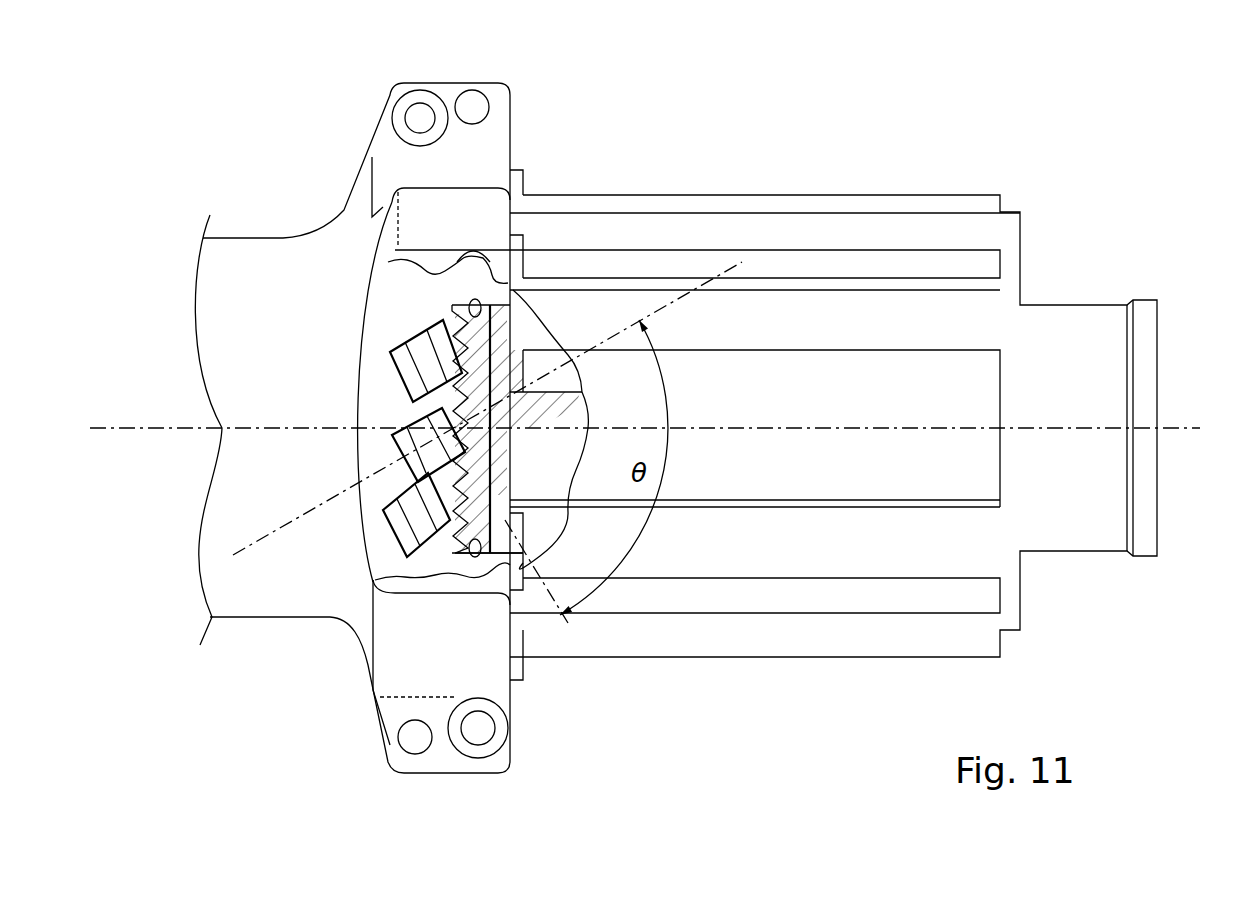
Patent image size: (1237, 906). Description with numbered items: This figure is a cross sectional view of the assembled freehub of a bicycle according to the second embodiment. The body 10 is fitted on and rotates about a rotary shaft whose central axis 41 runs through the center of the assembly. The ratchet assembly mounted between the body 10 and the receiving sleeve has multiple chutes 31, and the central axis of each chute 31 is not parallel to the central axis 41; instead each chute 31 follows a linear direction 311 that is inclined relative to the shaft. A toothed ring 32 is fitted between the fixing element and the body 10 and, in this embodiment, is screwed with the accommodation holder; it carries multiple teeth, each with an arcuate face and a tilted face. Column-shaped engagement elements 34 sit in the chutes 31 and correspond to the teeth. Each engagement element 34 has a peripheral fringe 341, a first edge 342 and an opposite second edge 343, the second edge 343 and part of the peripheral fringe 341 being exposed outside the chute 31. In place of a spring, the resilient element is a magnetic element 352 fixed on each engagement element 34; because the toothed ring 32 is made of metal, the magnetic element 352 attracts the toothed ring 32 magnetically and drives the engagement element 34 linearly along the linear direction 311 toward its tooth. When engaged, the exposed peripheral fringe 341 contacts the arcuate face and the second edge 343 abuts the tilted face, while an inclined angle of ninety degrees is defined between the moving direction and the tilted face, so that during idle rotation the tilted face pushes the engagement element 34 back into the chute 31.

The body 10 is at (227, 231).
The chute 31 is at (372, 364).
The central axis of the rotary shaft 41 is at (185, 425).
The engagement element 34 is at (422, 338).
The first edge 342 is at (395, 437).
The magnetic element 352 is at (397, 383).
The toothed ring 32 is at (475, 298).
The second edge 343 is at (566, 392).
The linear direction 311 is at (273, 532).
The peripheral fringe 341 is at (478, 560).